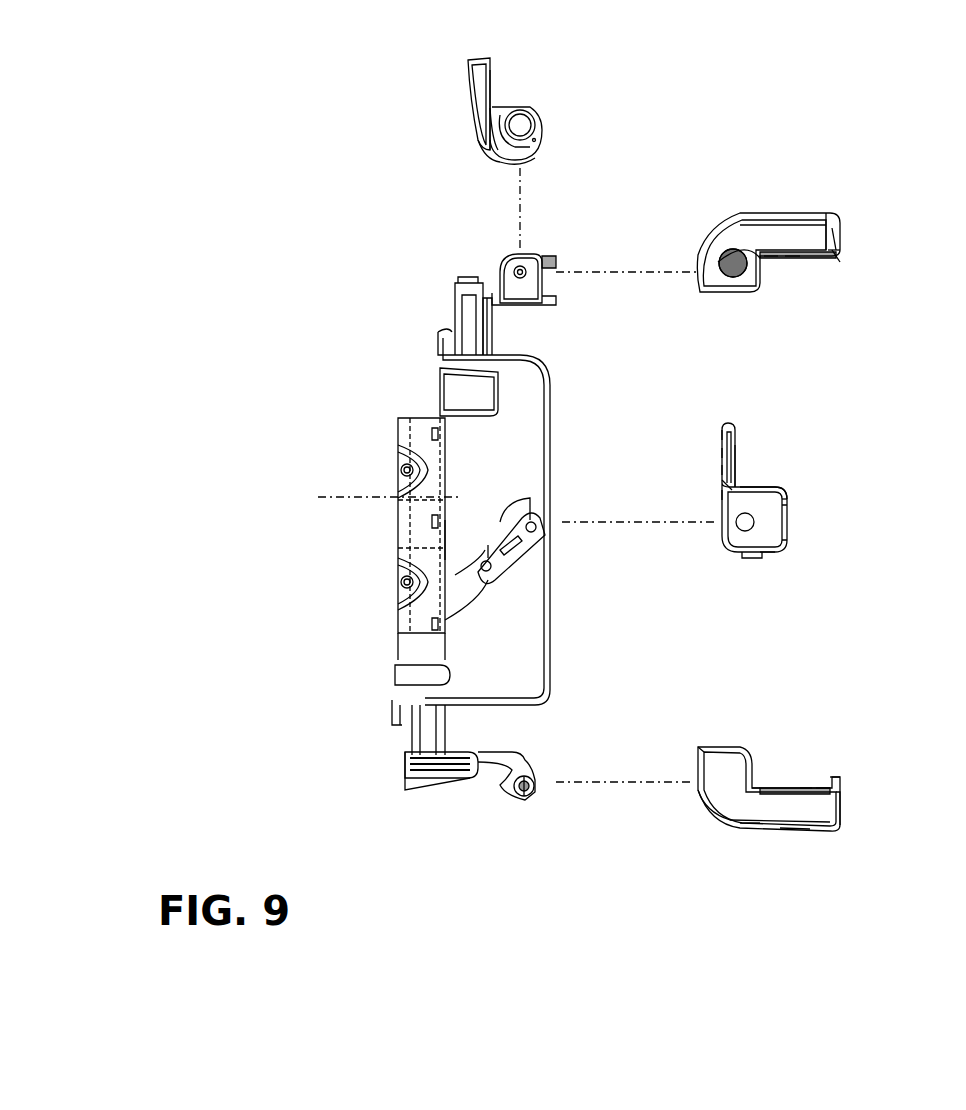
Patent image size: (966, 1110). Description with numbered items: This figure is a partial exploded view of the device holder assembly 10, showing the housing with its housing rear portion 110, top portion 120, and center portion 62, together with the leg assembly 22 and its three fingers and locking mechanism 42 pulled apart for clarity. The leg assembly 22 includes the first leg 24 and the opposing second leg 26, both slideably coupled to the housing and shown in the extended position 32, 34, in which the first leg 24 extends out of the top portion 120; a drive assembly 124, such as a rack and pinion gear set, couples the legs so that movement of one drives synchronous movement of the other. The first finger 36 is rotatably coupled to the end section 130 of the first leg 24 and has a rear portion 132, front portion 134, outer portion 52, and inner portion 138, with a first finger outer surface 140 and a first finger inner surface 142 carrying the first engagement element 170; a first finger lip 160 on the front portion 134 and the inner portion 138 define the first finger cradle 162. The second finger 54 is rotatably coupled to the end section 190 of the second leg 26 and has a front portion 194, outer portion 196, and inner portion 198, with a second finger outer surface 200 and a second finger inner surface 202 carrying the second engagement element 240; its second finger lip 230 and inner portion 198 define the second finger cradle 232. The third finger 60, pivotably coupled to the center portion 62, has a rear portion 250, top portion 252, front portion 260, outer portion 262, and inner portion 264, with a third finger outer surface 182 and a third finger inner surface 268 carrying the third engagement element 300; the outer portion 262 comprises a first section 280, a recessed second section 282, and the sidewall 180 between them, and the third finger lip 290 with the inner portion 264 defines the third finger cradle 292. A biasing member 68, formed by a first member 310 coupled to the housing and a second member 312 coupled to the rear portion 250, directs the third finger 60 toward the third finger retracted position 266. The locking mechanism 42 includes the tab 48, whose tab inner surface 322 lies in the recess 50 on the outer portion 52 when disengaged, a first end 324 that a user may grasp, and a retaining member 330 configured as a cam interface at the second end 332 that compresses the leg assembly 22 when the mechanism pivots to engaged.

The device holder assembly 10 is at (425, 240).
The leg assembly 22 is at (372, 462).
The first leg 24 is at (455, 300).
The second leg 26 is at (418, 740).
The extended position 32 is at (450, 325).
The extended position 34 is at (420, 742).
The first finger 36 is at (716, 223).
The locking mechanism 42 is at (535, 112).
The tab 48 is at (492, 100).
The recess 50 is at (778, 215).
The outer portion 52 is at (735, 222).
The second finger 54 is at (700, 805).
The third finger 60 is at (786, 522).
The center portion 62 is at (445, 540).
The biasing member 68 is at (488, 551).
The housing rear portion 110 is at (505, 575).
The top portion 120 is at (520, 360).
The drive assembly 124 is at (366, 498).
The end section 130 is at (508, 258).
The rear portion 132 is at (700, 262).
The front portion 134 is at (840, 225).
The inner portion 138 is at (828, 258).
The first finger outer surface 140 is at (812, 218).
The first finger inner surface 142 is at (808, 258).
The first finger lip 160 is at (840, 262).
The first finger cradle 162 is at (770, 258).
The first engagement element 170 is at (788, 258).
The sidewall 180 is at (752, 487).
The third finger outer surface 182 is at (745, 440).
The end section 190 is at (528, 800).
The front portion 194 is at (838, 795).
The outer portion 196 is at (748, 822).
The inner portion 198 is at (768, 775).
The second finger outer surface 200 is at (792, 828).
The second finger inner surface 202 is at (792, 778).
The second finger lip 230 is at (830, 780).
The second finger cradle 232 is at (805, 778).
The second engagement element 240 is at (815, 780).
The rear portion 250 is at (750, 558).
The top portion 252 is at (786, 498).
The front portion 260 is at (720, 426).
The outer portion 262 is at (780, 487).
The inner portion 264 is at (720, 494).
The third finger retracted position 266 is at (775, 552).
The third finger inner surface 268 is at (722, 452).
The first section 280 is at (787, 512).
The second section 282 is at (738, 430).
The third finger lip 290 is at (722, 432).
The third finger cradle 292 is at (722, 468).
The third engagement element 300 is at (722, 483).
The first member 310 is at (455, 580).
The second member 312 is at (512, 510).
The tab inner surface 322 is at (492, 78).
The first end 324 is at (476, 60).
The retaining member 330 is at (530, 158).
The second end 332 is at (490, 158).